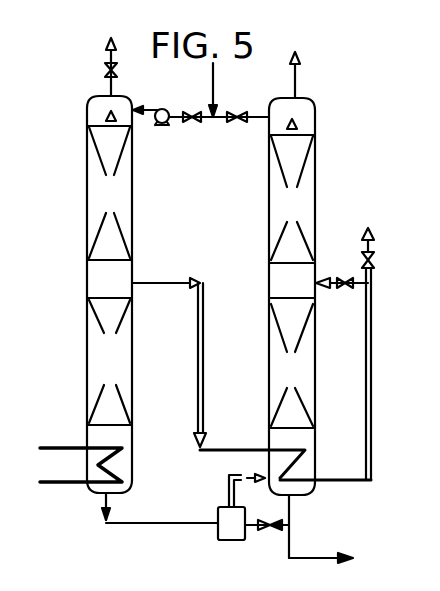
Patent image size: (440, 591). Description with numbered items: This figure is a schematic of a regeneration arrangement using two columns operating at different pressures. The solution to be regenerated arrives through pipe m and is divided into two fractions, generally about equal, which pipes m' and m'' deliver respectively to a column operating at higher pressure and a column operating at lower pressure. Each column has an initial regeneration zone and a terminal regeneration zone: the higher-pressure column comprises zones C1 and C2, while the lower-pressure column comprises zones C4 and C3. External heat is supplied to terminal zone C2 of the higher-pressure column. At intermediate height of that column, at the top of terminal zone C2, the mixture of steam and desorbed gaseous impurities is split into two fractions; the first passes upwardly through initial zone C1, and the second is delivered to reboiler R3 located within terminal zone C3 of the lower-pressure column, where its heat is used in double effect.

The initial regeneration zone of the higher-pressure column C1 is at (109, 192).
The terminal regeneration zone of the higher-pressure column C2 is at (109, 361).
The terminal regeneration zone of the lower-pressure column C3 is at (292, 365).
The initial regeneration zone of the lower-pressure column C4 is at (292, 198).
The reboiler R3 is at (327, 354).
The pipe m is at (220, 90).
The pipe m' is at (151, 119).
The pipe m'' is at (248, 126).